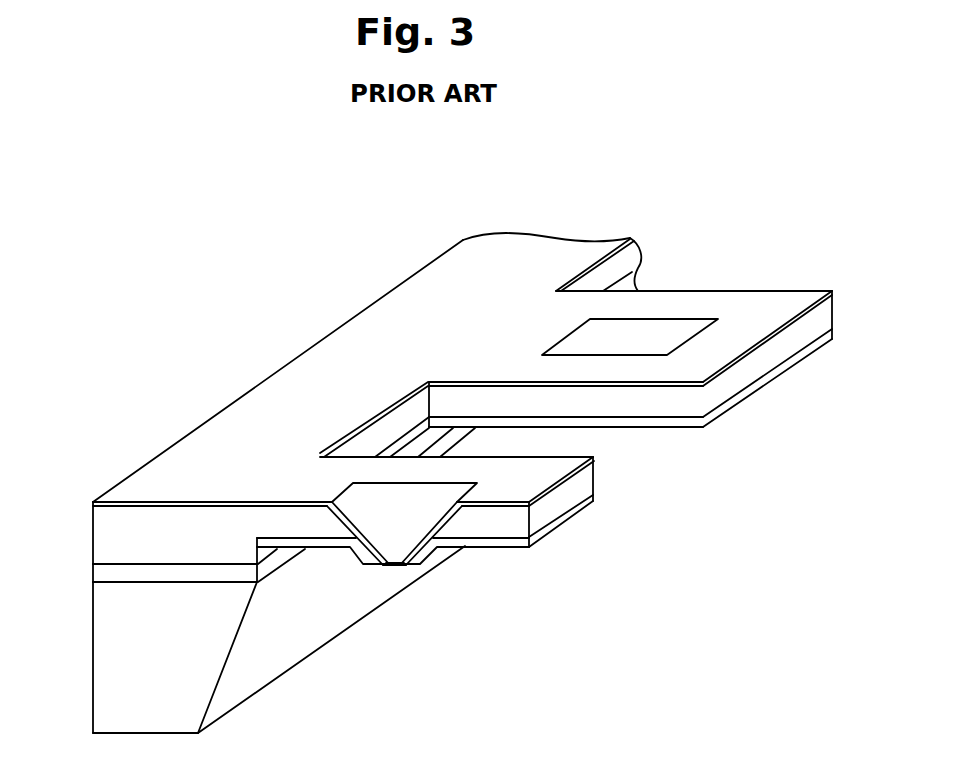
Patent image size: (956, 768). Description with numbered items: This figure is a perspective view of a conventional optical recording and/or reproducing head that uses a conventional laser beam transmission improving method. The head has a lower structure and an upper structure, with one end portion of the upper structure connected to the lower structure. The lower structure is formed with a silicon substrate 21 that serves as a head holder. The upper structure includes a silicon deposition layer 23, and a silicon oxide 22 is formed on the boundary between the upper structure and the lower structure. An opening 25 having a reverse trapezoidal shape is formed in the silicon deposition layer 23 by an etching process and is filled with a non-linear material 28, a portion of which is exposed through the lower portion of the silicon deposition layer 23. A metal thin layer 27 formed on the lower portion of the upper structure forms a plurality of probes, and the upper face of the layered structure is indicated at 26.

The silicon substrate 21 is at (95, 644).
The silicon oxide 22 is at (95, 573).
The silicon deposition layer 23 is at (95, 530).
The opening 25 is at (350, 476).
The top surface 26 is at (92, 504).
The metal thin layer 27 is at (519, 545).
The non-linear material 28 is at (400, 545).